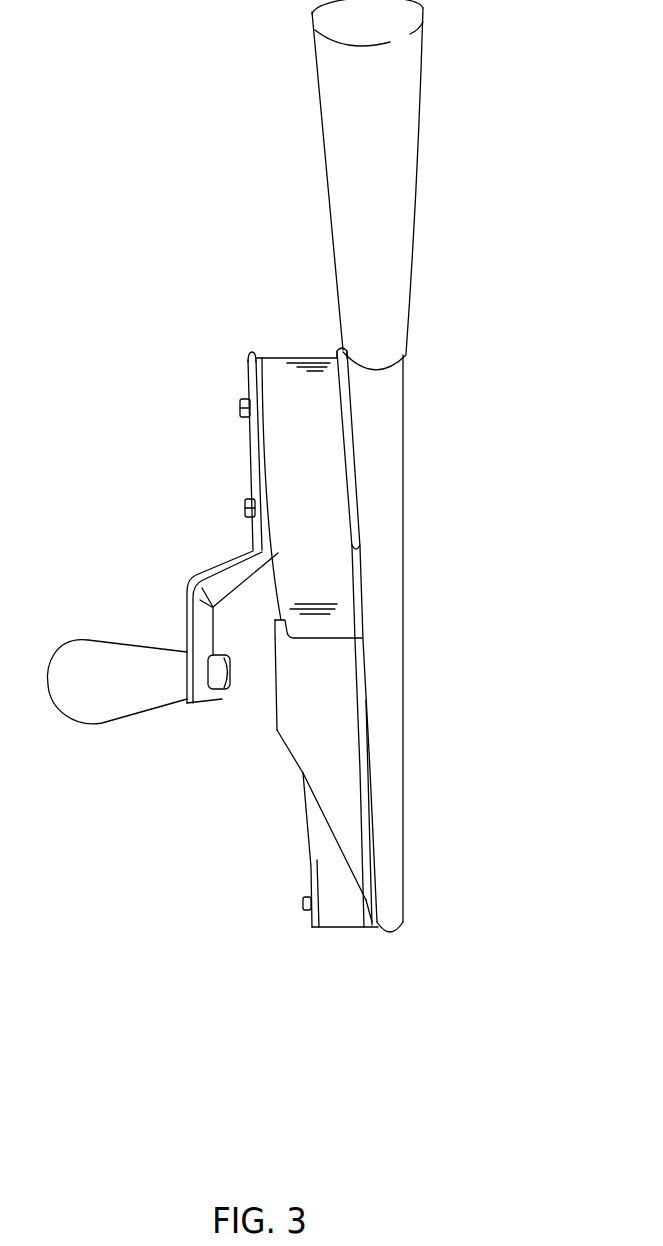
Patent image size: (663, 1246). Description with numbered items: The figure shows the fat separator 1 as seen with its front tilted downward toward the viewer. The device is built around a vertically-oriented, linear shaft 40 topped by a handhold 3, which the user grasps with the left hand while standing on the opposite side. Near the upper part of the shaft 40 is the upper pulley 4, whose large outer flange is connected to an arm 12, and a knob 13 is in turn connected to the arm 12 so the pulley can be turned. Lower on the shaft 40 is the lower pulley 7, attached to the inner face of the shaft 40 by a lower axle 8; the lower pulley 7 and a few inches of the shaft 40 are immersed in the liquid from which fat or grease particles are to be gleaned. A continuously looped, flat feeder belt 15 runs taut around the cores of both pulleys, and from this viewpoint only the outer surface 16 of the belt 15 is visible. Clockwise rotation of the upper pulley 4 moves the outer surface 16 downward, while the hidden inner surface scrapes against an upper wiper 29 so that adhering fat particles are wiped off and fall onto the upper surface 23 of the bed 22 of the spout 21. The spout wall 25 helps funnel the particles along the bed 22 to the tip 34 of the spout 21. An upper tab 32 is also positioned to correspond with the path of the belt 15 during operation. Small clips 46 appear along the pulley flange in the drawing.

The fat separator 1 is at (243, 99).
The handhold 3 is at (424, 93).
The upper pulley 4 is at (225, 495).
The lower pulley 7 is at (311, 928).
The lower axle 8 is at (306, 910).
The arm 12 is at (191, 580).
The knob 13 is at (102, 725).
The feeder belt 15 is at (222, 616).
The outer surface of the belt 16 is at (282, 360).
The spout 21 is at (264, 850).
The bed of the spout 22 is at (264, 850).
The upper surface of the spout bed 23 is at (327, 780).
The spout wall 25 is at (366, 700).
The upper wiper 29 is at (327, 642).
The upper tab 32 is at (277, 632).
The tip 34 is at (367, 890).
The shaft 40 is at (404, 565).
The clips 46 is at (247, 500).